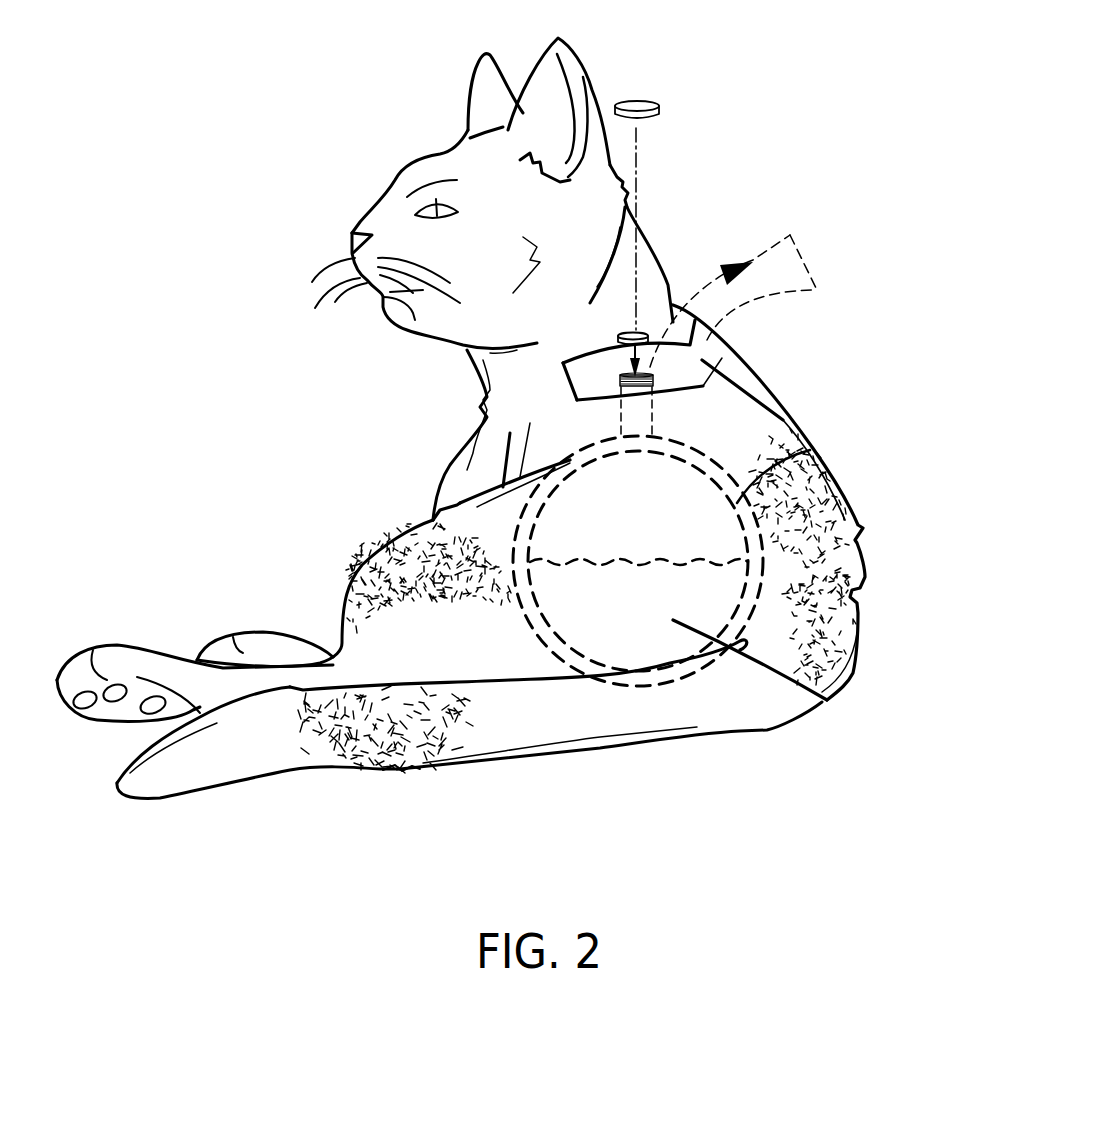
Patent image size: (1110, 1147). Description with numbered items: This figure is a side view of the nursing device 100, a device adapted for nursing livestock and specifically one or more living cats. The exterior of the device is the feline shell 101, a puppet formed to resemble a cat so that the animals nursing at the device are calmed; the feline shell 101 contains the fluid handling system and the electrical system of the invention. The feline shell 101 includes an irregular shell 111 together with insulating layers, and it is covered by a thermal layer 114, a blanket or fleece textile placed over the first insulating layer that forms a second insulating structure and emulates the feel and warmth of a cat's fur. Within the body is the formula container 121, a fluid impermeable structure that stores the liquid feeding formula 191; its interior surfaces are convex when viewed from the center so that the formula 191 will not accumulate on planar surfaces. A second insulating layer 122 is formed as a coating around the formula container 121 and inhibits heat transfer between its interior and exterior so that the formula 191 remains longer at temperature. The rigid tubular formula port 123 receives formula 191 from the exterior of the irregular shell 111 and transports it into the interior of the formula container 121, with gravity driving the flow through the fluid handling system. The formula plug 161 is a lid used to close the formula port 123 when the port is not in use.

The nursing device 100 is at (235, 112).
The feline shell 101 is at (583, 82).
The irregular shell 111 is at (593, 213).
The thermal layer 114 is at (817, 618).
The formula container 121 is at (687, 560).
The second insulating layer 122 is at (805, 443).
The formula port 123 is at (652, 413).
The formula plug 161 is at (660, 105).
The liquid feeding formula 191 is at (814, 710).